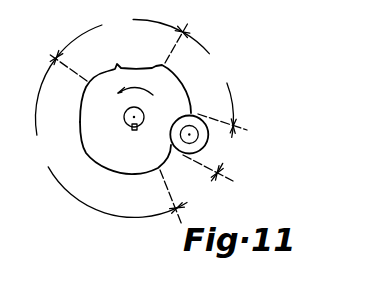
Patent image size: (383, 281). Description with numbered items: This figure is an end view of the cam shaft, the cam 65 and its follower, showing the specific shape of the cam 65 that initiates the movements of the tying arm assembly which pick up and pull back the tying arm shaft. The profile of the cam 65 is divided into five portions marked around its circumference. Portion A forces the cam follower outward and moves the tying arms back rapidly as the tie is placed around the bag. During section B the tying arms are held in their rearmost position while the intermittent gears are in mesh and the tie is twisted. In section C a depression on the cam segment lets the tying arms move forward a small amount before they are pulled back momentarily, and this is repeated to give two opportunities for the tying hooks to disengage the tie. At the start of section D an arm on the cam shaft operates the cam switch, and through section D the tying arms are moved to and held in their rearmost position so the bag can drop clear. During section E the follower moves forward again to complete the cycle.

The cam 65 is at (155, 99).
The portion A of the cam A is at (197, 190).
The section B of the cam B is at (105, 138).
The section C of the cam C is at (120, 33).
The section D of the cam D is at (210, 79).
The section E of the cam E is at (226, 149).